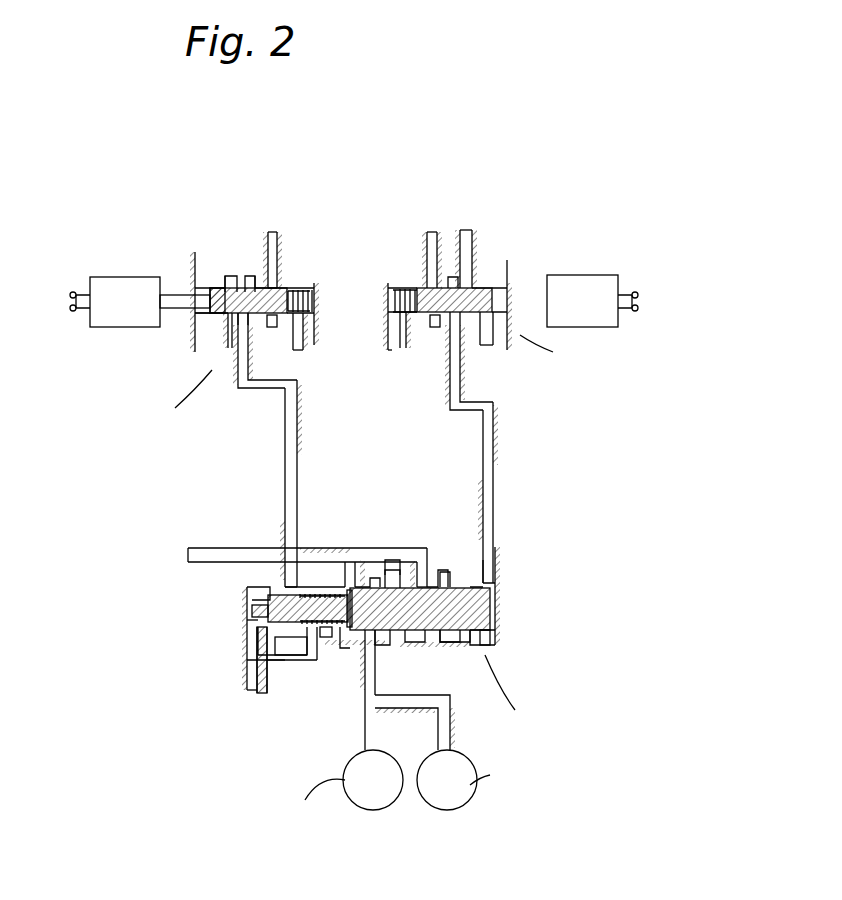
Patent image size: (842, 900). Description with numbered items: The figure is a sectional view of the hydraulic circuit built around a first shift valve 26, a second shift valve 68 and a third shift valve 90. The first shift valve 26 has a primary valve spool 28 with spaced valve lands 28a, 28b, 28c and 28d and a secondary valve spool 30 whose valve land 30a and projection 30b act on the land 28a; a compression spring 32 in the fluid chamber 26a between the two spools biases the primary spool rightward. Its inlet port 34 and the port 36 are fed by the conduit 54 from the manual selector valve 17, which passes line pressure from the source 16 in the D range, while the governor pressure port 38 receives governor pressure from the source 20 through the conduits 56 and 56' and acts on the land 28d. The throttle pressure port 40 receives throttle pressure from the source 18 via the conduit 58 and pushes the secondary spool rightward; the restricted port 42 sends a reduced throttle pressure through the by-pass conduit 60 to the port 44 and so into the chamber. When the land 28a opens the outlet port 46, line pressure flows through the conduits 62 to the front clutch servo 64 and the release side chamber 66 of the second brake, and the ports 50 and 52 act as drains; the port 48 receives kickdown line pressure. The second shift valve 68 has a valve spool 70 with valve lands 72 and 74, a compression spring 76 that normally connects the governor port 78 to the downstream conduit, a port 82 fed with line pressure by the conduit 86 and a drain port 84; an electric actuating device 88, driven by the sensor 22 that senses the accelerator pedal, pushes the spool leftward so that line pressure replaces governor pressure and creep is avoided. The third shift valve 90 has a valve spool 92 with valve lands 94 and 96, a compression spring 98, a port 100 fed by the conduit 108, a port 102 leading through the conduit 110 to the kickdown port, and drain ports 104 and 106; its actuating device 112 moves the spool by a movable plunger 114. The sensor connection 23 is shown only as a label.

The source of line pressure 16 is at (432, 232).
The manual selector valve 17 is at (188, 558).
The source of throttle pressure 18 is at (227, 745).
The source of governor pressure 20 is at (482, 230).
The sensor 22 is at (674, 285).
The sensor 23 is at (68, 300).
The first shift valve 26 is at (520, 628).
The fluid chamber 26a is at (292, 585).
The primary valve spool 28 is at (503, 590).
The valve land 28a is at (365, 695).
The valve land 28b is at (415, 632).
The valve land 28c is at (452, 640).
The valve land 28d is at (490, 645).
The secondary valve spool 30 is at (250, 625).
The valve land 30a is at (252, 603).
The projection 30b is at (318, 626).
The compression spring 32 is at (322, 630).
The inlet port 34 is at (350, 585).
The port 36 is at (425, 585).
The governor pressure port 38 is at (488, 572).
The throttle pressure port 40 is at (250, 620).
The port 42 is at (275, 660).
The port 44 is at (342, 650).
The outlet port 46 is at (380, 640).
The port 48 is at (285, 580).
The drain port 50 is at (390, 575).
The drain port 52 is at (448, 575).
The conduit 54 is at (305, 555).
The conduit 56 is at (513, 492).
The conduit 56' is at (489, 240).
The conduit 58 is at (247, 688).
The by-pass conduit 60 is at (300, 655).
The conduits 62 is at (376, 735).
The front clutch servo 64 is at (388, 792).
The release side chamber of second brake 66 is at (462, 792).
The second shift valve 68 is at (540, 222).
The valve spool 70 is at (462, 320).
The valve land 72 is at (435, 330).
The valve land 74 is at (493, 318).
The compression spring 76 is at (400, 295).
The port 78 is at (490, 290).
The port 82 is at (442, 285).
The drain port 84 is at (395, 330).
The conduit 86 is at (430, 250).
The electric actuating device 88 is at (590, 283).
The third shift valve 90 is at (201, 224).
The valve spool 92 is at (240, 285).
The valve land 94 is at (205, 318).
The valve land 96 is at (292, 292).
The compression spring 98 is at (313, 300).
The port 100 is at (275, 285).
The port 102 is at (250, 322).
The drain port 104 is at (240, 322).
The drain port 106 is at (305, 320).
The conduit 108 is at (276, 248).
The conduit 110 is at (297, 440).
The actuating device 112 is at (125, 292).
The movable plunger 114 is at (185, 300).